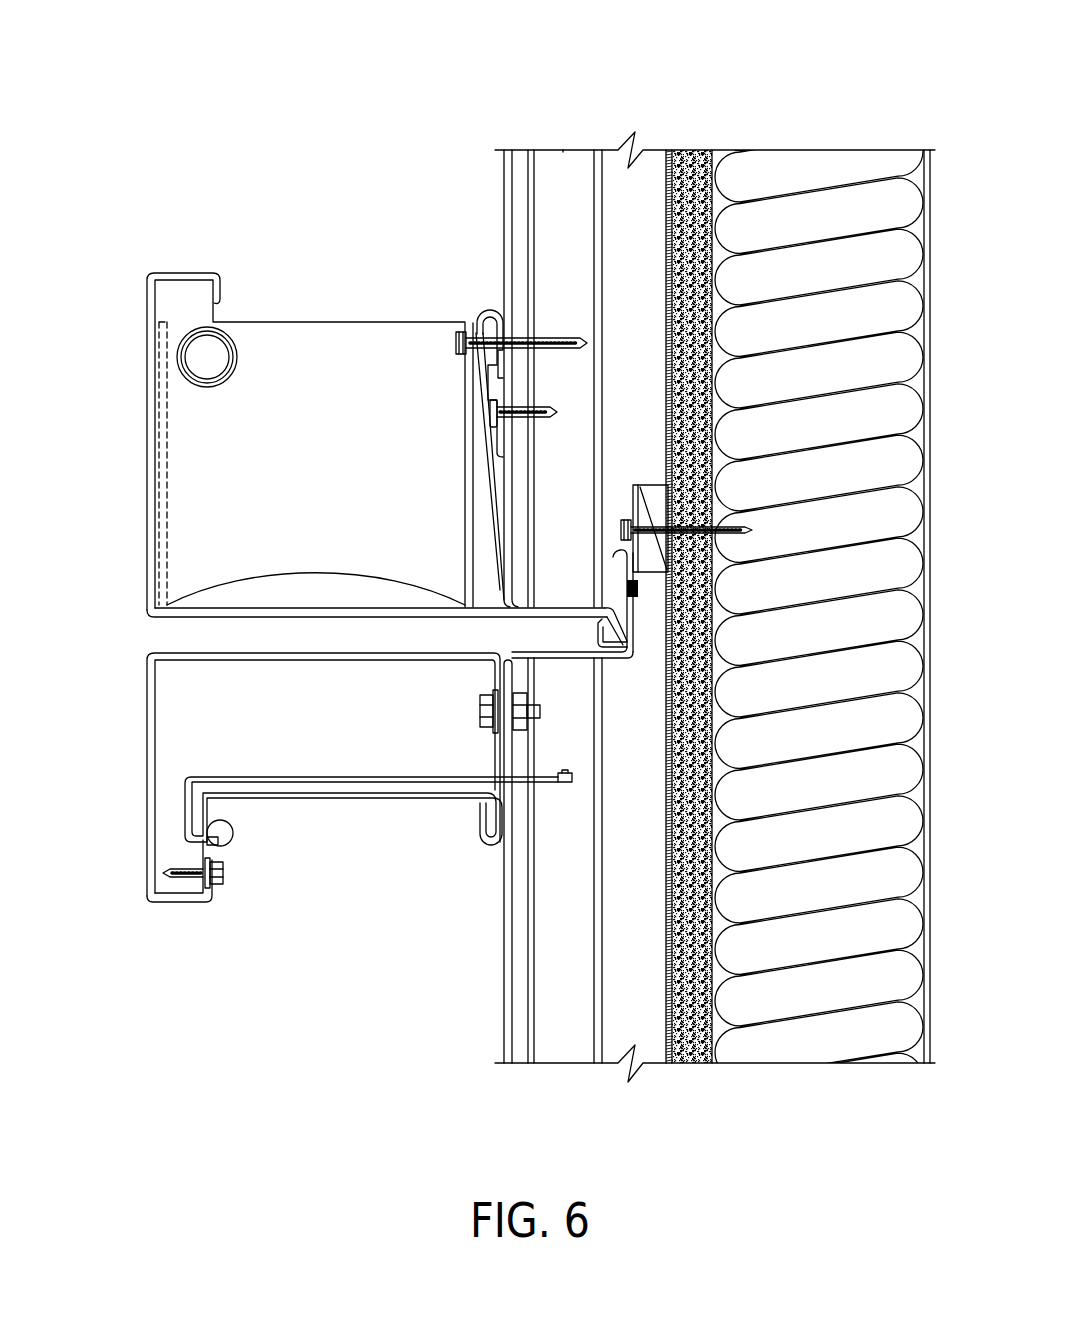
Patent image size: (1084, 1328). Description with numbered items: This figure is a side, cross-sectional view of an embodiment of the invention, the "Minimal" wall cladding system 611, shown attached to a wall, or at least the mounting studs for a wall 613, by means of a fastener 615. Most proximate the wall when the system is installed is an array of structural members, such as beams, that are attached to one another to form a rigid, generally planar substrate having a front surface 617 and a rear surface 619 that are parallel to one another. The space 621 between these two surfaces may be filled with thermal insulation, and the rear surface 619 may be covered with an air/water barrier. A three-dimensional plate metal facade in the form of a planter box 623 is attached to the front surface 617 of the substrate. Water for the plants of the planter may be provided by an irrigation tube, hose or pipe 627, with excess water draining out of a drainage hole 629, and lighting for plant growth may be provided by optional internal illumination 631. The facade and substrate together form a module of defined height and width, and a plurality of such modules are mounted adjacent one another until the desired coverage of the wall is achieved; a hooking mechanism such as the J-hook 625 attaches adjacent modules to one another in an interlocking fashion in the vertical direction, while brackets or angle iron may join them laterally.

The Minimal system 611 is at (276, 158).
The wall 613 is at (693, 155).
The fastener 615 is at (620, 533).
The front surface 617 is at (533, 148).
The rear surface 619 is at (595, 148).
The space 621 is at (557, 192).
The planter box 623 is at (147, 297).
The J-hook 625 is at (598, 634).
The irrigation tube, hose or pipe 627 is at (178, 338).
The drainage hole 629 is at (307, 593).
The internal illumination 631 is at (183, 823).